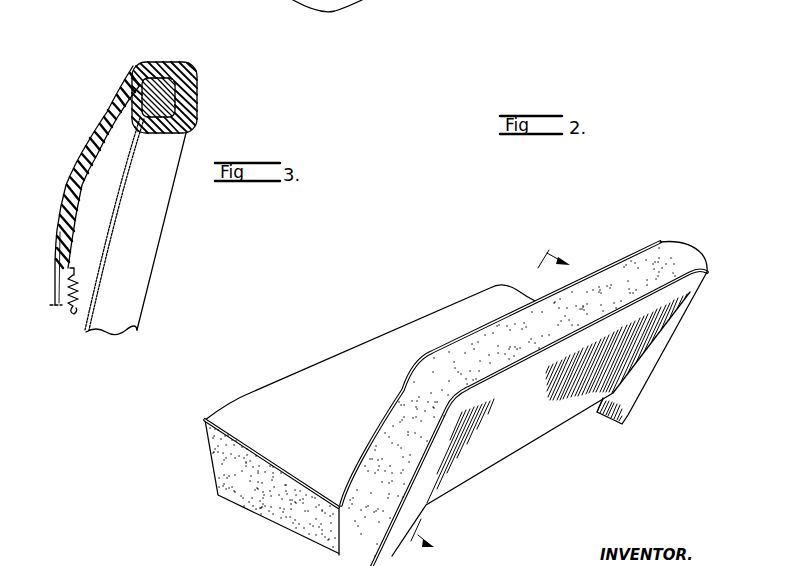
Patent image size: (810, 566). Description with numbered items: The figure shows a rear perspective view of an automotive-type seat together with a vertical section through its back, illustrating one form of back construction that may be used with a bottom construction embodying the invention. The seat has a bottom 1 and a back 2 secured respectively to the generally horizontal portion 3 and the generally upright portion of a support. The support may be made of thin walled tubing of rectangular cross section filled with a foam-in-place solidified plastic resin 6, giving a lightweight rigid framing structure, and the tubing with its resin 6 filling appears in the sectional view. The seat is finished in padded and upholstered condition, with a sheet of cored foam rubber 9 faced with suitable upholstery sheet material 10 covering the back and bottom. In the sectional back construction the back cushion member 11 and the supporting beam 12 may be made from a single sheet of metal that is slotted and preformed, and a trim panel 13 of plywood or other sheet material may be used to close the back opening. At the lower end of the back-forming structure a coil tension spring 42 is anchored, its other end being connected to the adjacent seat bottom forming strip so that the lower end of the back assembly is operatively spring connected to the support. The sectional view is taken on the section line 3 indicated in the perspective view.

In FIG. 2, the bottom 1 is at (301, 411).
In FIG. 3, the back 2 is at (170, 232).
In FIG. 2, the back 2 is at (527, 408).
In FIG. 2, the generally horizontal portion 3 is at (486, 401).
In FIG. 3, the foam-in-place solidified plastic resin 6 is at (173, 77).
In FIG. 3, the sheet of cored foam rubber 9 is at (131, 65).
In FIG. 3, the upholstery sheet material 10 is at (122, 88).
In FIG. 3, the back cushion member 11 is at (98, 178).
In FIG. 3, the supporting beam 12 is at (190, 110).
In FIG. 3, the trim panel 13 is at (127, 175).
In FIG. 3, the coil tension spring 42 is at (72, 311).